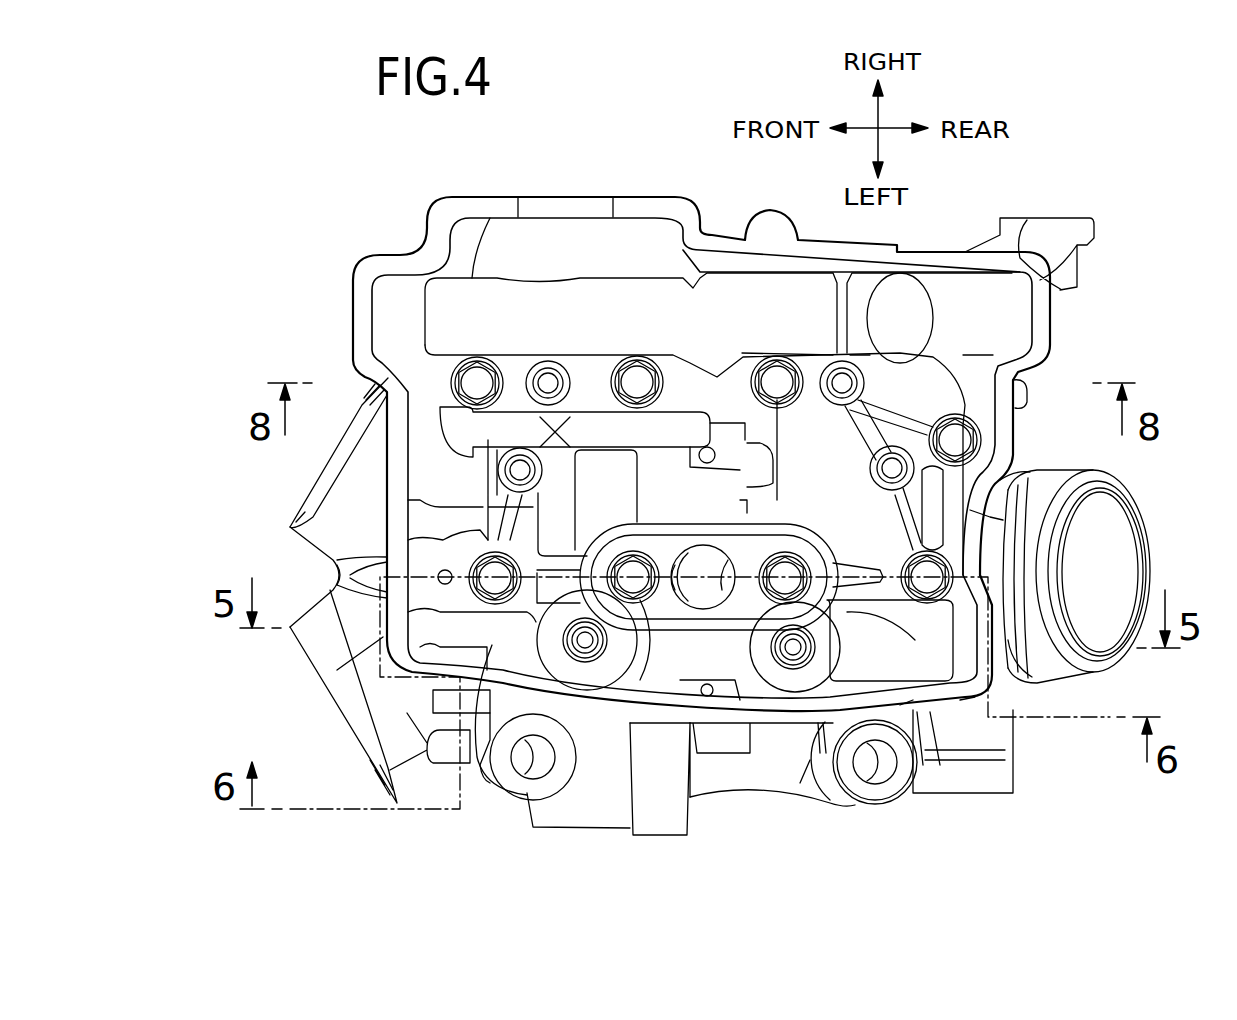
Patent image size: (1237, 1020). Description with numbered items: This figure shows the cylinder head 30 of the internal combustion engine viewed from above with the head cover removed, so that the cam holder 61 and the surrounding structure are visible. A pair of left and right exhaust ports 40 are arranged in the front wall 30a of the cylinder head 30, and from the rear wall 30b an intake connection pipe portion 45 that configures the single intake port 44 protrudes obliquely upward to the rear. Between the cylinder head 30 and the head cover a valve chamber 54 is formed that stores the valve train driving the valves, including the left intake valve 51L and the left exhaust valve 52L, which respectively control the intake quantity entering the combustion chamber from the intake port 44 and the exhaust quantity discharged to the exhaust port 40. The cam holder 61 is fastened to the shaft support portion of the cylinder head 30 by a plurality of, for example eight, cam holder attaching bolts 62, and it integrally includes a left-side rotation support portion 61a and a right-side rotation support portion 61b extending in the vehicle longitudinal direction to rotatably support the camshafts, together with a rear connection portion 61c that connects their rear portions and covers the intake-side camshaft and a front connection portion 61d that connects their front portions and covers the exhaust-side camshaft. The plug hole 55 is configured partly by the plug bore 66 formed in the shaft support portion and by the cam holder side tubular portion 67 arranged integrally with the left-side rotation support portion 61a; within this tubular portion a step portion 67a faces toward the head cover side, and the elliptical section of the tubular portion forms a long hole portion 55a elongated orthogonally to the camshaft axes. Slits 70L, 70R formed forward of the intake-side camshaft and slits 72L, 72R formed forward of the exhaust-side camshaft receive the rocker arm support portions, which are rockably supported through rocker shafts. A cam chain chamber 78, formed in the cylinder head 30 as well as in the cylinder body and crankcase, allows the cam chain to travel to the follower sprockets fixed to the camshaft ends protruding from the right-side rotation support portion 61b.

The cylinder head 30 is at (802, 760).
The front wall 30a is at (340, 576).
The rear wall 30b is at (1010, 460).
The exhaust port 40 is at (333, 473).
The intake port 44 is at (1120, 557).
The intake connection pipe portion 45 is at (1010, 662).
The intake valve 51L is at (785, 690).
The exhaust valve 52L is at (588, 680).
The valve chamber 54 is at (938, 639).
The plug hole 55 is at (693, 542).
The long hole portion 55a is at (735, 548).
The cam holder 61 is at (975, 392).
The left-side rotation support portion 61a is at (882, 593).
The right-side rotation support portion 61b is at (812, 358).
The rear connection portion 61c is at (1003, 512).
The front connection portion 61d is at (488, 517).
The cam holder attaching bolt 62 is at (478, 375).
The plug bore 66 is at (633, 527).
The cam holder side tubular portion 67 is at (667, 623).
The step portion 67a is at (843, 690).
The slit 70L is at (687, 670).
The slit 70R is at (777, 493).
The slit 72L is at (482, 735).
The slit 72R is at (408, 554).
The cam chain chamber 78 is at (668, 312).